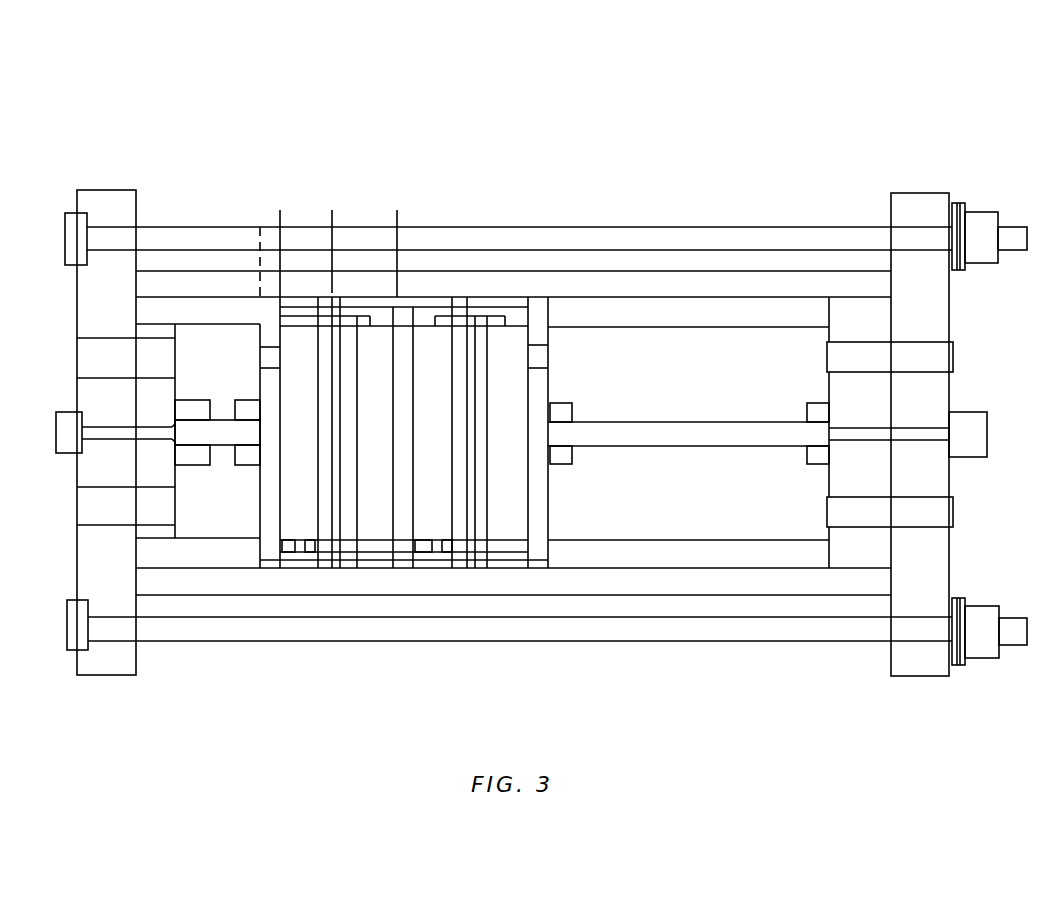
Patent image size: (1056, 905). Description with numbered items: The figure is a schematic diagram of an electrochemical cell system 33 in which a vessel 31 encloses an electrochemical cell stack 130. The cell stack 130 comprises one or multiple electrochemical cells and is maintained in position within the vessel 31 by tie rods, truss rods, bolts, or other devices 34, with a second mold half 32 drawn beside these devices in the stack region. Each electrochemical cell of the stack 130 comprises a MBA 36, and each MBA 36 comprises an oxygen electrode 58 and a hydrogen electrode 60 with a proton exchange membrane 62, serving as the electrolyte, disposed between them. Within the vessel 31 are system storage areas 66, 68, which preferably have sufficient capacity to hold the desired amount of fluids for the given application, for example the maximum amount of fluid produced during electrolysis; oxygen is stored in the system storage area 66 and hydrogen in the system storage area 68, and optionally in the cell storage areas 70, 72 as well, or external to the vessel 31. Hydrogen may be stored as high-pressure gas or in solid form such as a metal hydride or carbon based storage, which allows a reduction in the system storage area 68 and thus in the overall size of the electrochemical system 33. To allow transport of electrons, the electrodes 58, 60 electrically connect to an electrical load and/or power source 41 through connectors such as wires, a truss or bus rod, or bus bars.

The electrochemical cell system 33 is at (393, 70).
The vessel 31 is at (718, 275).
The electrochemical cell stack 130 is at (258, 155).
The tie rods, truss rods, bolts, or other devices 34 is at (332, 220).
The second mold half 32 is at (397, 220).
The MBA 36 is at (337, 280).
The electrical load and/or power source 41 is at (227, 447).
The cell storage area 72 is at (311, 387).
The cell storage area 70 is at (388, 387).
The system storage area 66 is at (328, 458).
The system storage area 68 is at (350, 450).
The oxygen electrode 58 is at (358, 545).
The proton exchange membrane 62 is at (337, 567).
The hydrogen electrode 60 is at (358, 545).